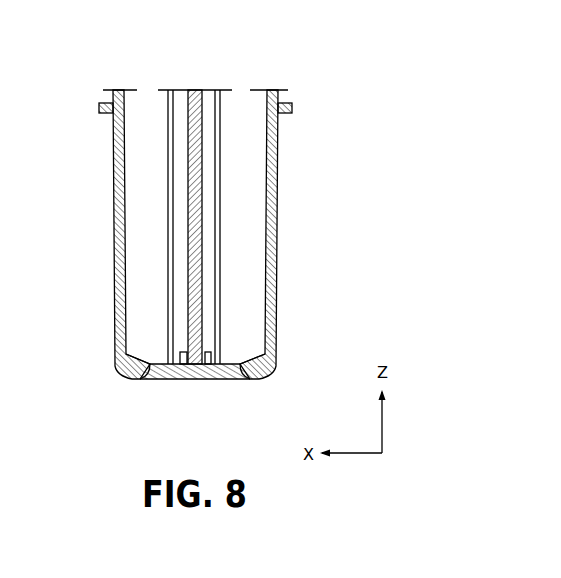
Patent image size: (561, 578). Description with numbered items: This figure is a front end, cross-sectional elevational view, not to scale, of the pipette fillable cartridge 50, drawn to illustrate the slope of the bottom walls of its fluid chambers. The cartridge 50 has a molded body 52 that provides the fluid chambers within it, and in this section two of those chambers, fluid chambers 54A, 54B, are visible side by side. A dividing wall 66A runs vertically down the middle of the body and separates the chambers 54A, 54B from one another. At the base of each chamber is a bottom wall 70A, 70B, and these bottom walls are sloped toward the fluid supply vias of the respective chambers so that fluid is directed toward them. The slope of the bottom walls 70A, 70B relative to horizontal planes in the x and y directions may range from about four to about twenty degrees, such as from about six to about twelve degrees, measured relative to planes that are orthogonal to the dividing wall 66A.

The cartridge 50 is at (99, 156).
The molded body 52 is at (115, 322).
The fluid chamber 54A is at (237, 117).
The fluid chamber 54B is at (150, 117).
The dividing wall 66A is at (193, 127).
The bottom wall 70A is at (243, 379).
The bottom wall 70B is at (150, 379).